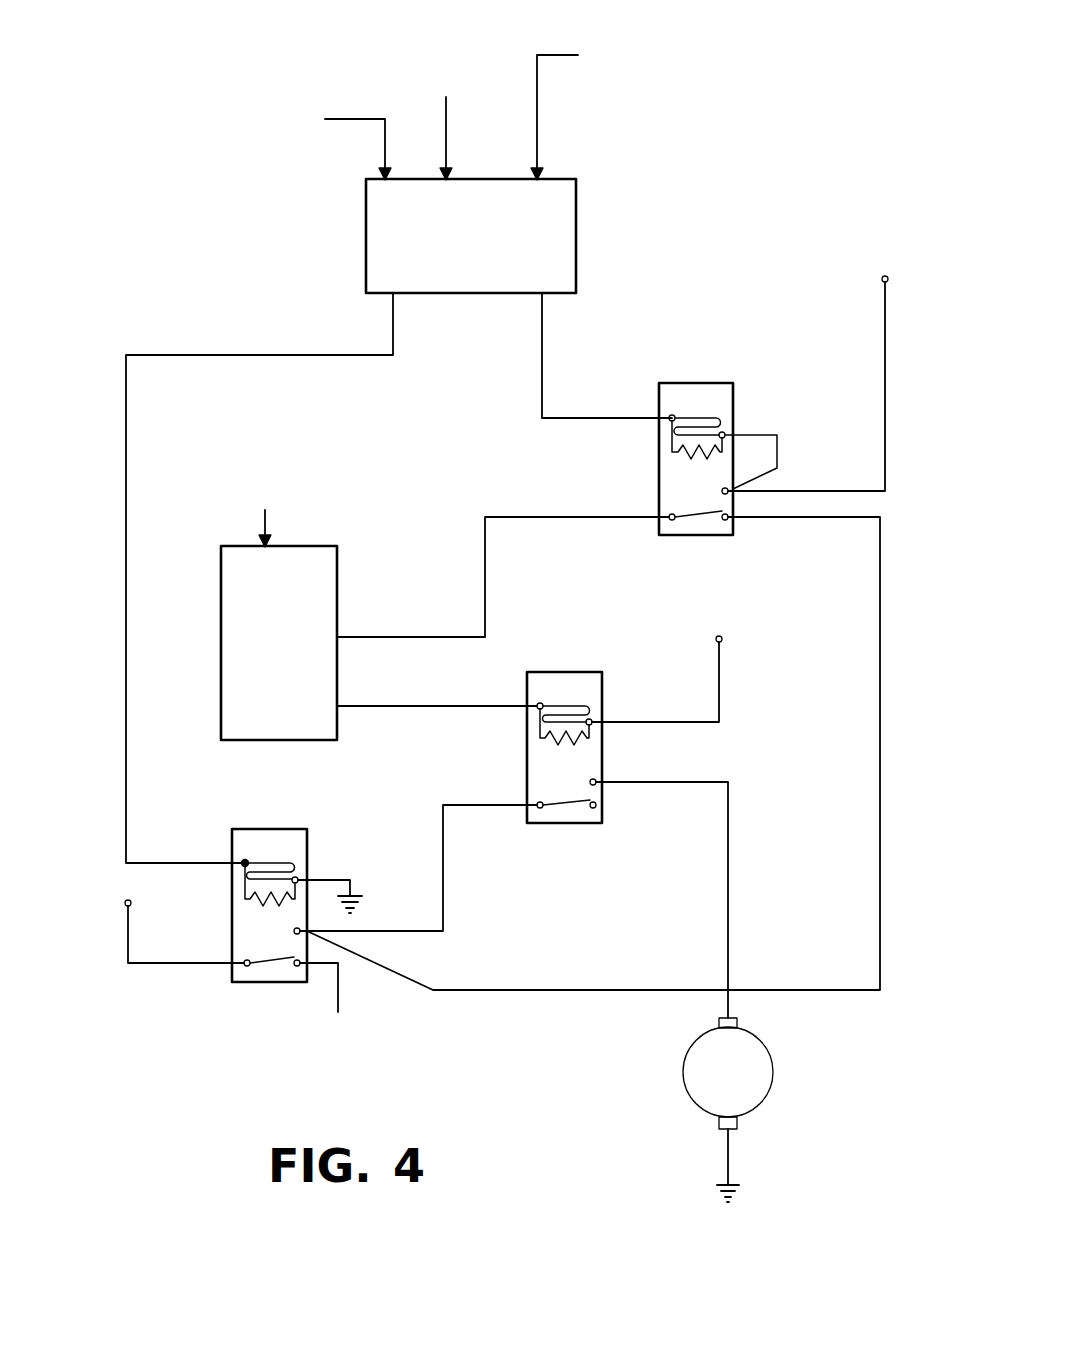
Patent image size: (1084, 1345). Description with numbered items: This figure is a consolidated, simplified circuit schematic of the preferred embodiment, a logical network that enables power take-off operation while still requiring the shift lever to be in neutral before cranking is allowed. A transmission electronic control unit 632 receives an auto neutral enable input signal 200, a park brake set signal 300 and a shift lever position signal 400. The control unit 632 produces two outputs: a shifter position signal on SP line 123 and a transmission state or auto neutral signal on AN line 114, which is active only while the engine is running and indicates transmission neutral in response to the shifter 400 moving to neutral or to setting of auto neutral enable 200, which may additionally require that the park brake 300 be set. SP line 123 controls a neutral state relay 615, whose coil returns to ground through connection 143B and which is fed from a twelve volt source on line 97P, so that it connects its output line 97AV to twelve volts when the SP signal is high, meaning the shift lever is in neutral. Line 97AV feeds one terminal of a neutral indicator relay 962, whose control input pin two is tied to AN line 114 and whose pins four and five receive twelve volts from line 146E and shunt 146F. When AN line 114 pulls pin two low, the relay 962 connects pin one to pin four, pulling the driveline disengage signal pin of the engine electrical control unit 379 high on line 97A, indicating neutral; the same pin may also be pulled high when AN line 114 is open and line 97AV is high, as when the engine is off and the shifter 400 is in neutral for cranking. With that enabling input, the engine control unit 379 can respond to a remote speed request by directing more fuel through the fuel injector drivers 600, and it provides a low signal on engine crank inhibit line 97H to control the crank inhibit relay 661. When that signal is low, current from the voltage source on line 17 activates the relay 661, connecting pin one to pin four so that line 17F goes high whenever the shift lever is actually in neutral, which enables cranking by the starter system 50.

The auto neutral enable input signal 200 is at (240, 174).
The park brake set signal 300 is at (504, 104).
The shift lever position signal 400 is at (680, 94).
The transmission electronic control unit 632 is at (576, 238).
The SP line 123 is at (393, 323).
The AN line 114 is at (542, 335).
The neutral indicator relay 962 is at (733, 383).
The line 146E is at (885, 368).
The shunt 146F is at (777, 452).
The engine electrical control unit 379 is at (234, 740).
The fuel injector drivers 600 is at (390, 621).
The line 97A is at (485, 610).
The engine crank inhibit line 97H is at (403, 706).
The crank inhibit relay 661 is at (587, 823).
The line 17 is at (719, 700).
The line 17F is at (728, 840).
The neutral state relay 615 is at (250, 982).
The ground wire 143B is at (352, 881).
The +12V supply wire to NSR 97P is at (155, 945).
The output line 97AV is at (553, 990).
The starter system 50 is at (772, 1063).